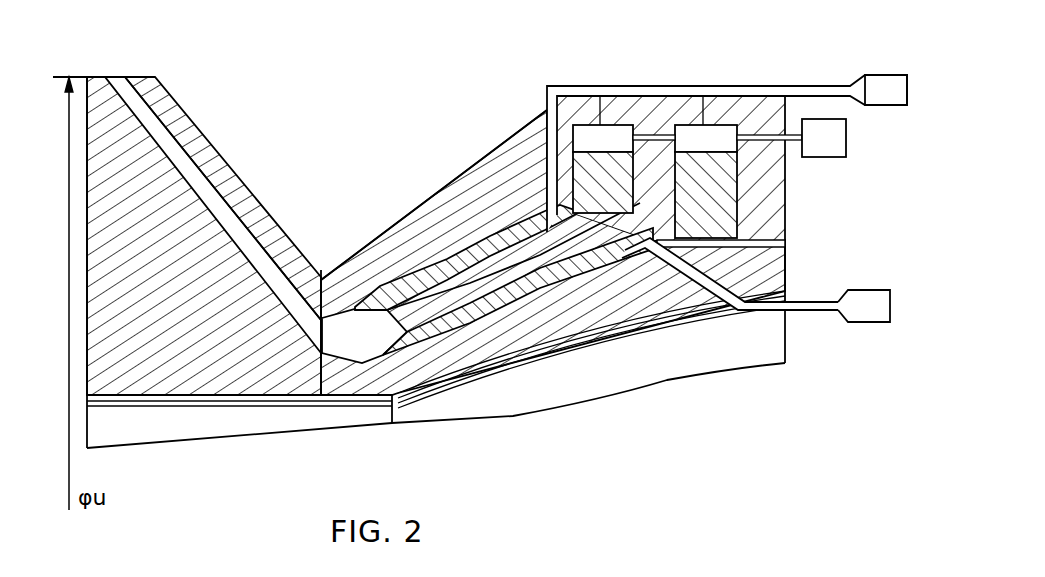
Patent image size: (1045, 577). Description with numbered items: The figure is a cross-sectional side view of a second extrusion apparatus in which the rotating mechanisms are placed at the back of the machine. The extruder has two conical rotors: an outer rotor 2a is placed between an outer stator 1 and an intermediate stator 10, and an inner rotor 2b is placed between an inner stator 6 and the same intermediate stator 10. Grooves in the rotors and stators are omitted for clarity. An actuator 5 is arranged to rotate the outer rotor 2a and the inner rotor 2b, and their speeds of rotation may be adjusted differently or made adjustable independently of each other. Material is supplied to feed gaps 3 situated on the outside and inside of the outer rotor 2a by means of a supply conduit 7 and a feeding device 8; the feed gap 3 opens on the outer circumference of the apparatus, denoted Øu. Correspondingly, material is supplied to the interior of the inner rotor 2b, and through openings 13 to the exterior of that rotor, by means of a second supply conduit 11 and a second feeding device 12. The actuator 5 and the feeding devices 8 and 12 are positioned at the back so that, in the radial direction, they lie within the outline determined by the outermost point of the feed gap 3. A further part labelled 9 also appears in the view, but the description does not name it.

The outer stator 1 is at (458, 184).
The outer rotor 2a is at (487, 215).
The inner rotor 2b is at (560, 283).
The feed gap 3 is at (204, 185).
The actuator 5 is at (818, 143).
The inner stator 6 is at (633, 287).
The supply conduit 7 is at (655, 88).
The feeding device 8 is at (886, 90).
The cavity 9 is at (547, 213).
The intermediate stator 10 is at (512, 268).
The second supply conduit 11 is at (788, 297).
The second feeding device 12 is at (850, 308).
The openings 13 is at (752, 241).